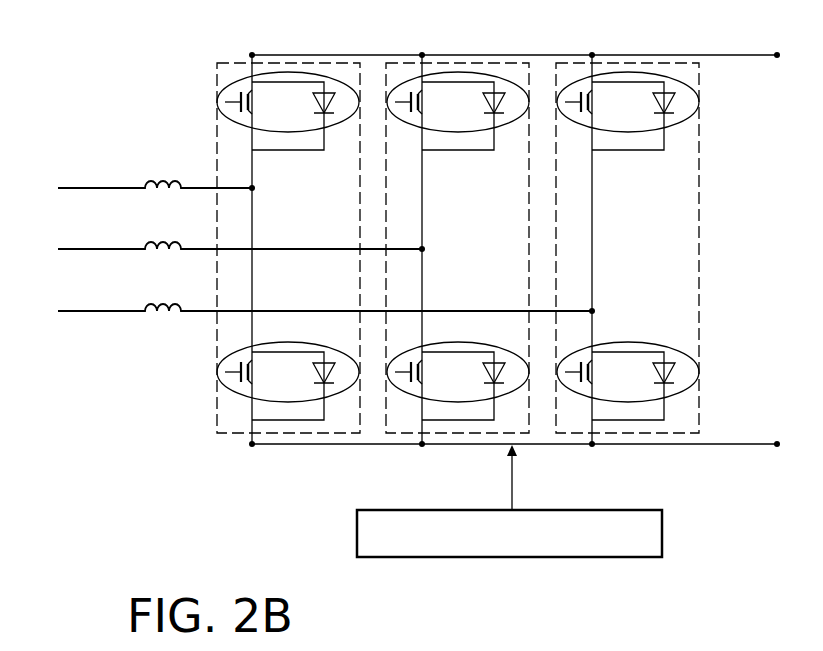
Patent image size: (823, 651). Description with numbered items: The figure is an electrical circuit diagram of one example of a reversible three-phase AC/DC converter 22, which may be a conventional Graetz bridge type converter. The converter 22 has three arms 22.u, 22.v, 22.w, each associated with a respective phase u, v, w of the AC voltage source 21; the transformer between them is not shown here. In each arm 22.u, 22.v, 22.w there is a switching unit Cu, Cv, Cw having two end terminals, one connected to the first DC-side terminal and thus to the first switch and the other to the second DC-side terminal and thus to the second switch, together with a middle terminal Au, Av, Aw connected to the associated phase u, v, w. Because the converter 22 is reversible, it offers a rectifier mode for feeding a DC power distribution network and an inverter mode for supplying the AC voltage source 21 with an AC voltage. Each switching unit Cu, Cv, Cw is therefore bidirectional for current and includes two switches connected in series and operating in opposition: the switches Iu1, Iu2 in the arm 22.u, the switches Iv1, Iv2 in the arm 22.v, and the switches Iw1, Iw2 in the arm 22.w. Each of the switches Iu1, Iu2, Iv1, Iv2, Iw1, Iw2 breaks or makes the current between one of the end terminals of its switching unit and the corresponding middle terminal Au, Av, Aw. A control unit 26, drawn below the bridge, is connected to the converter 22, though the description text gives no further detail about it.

The AC voltage source 21 is at (115, 317).
The AC/DC converter 22 is at (506, 267).
The arm 22.u is at (288, 247).
The arm 22.v is at (457, 246).
The arm 22.w is at (628, 250).
The control unit 26 is at (472, 545).
The switching unit Cu is at (300, 78).
The switching unit Cv is at (468, 77).
The switching unit Cw is at (648, 76).
The switch Iu1 is at (278, 140).
The switch Iv1 is at (453, 140).
The switch Iw1 is at (622, 142).
The switch Iu2 is at (285, 408).
The switch Iv2 is at (455, 408).
The switch Iw2 is at (642, 413).